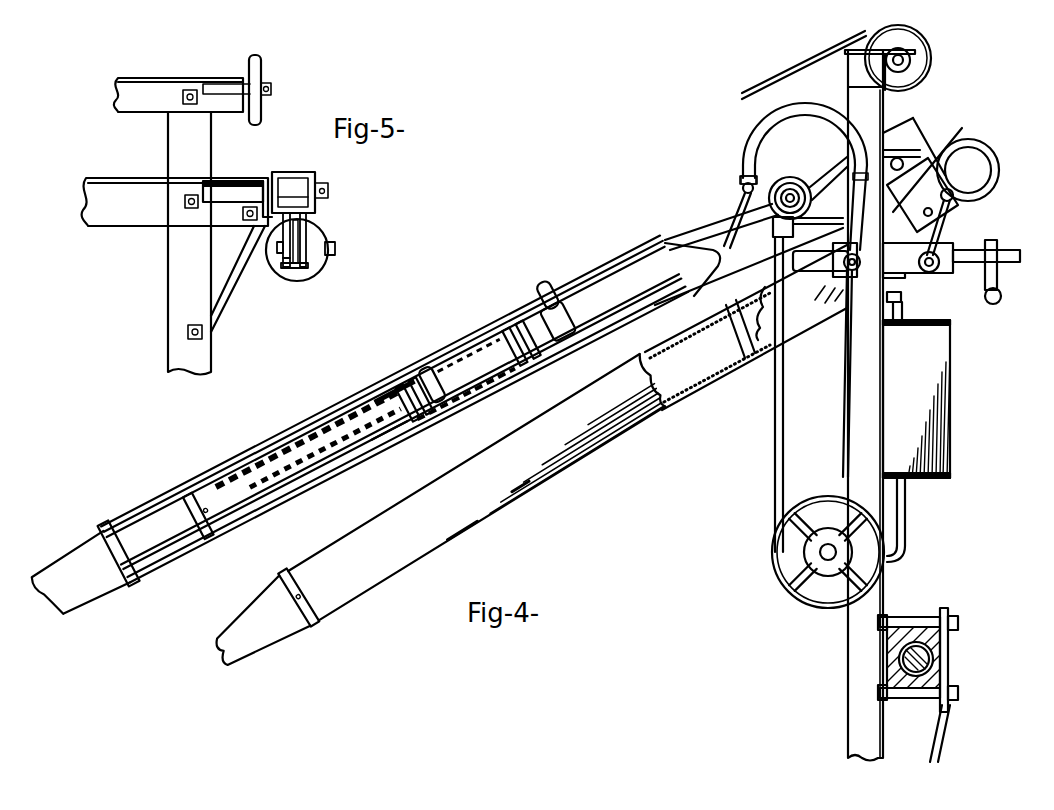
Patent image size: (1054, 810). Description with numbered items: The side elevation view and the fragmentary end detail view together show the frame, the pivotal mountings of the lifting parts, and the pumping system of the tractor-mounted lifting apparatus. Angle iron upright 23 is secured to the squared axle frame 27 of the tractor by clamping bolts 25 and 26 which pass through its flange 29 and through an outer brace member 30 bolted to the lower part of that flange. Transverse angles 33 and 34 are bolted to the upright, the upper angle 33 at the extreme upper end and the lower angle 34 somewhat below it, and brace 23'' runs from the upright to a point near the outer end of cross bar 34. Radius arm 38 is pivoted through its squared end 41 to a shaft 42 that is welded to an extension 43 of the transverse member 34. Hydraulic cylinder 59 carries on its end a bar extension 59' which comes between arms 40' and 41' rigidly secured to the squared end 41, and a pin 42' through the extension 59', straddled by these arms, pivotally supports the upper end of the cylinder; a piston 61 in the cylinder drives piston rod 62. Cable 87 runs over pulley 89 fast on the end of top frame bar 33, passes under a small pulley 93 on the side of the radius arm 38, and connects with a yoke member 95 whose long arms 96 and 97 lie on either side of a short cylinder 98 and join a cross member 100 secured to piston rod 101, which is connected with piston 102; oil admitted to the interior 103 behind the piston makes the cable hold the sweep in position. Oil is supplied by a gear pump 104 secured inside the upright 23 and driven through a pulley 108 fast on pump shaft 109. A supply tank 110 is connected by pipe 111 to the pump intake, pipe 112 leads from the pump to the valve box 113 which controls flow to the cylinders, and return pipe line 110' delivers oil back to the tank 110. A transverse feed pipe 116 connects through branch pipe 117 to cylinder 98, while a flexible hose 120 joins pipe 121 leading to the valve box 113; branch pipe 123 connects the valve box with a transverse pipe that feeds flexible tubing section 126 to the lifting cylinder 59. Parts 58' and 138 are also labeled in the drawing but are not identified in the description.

In FIG. 5, the angle iron upright 23 is at (173, 243).
In FIG. 4, the angle iron upright 23 is at (837, 405).
In FIG. 5, the brace 23'' is at (257, 284).
In FIG. 4, the clamping bolt 25 is at (924, 610).
In FIG. 4, the clamping bolt 26 is at (929, 695).
In FIG. 4, the squared axle frame 27 is at (947, 677).
In FIG. 4, the flange 29 is at (896, 592).
In FIG. 4, the outer brace member 30 is at (947, 658).
In FIG. 5, the transverse angle 33 is at (143, 101).
In FIG. 4, the transverse angle 33 is at (883, 73).
In FIG. 5, the transverse angle 34 is at (137, 213).
In FIG. 4, the transverse angle 34 is at (912, 135).
In FIG. 4, the radius arm 38 is at (62, 567).
In FIG. 5, the arm 40' is at (264, 273).
In FIG. 4, the arm 40' is at (943, 162).
In FIG. 5, the squared end 41 is at (321, 192).
In FIG. 5, the arm 41' is at (321, 235).
In FIG. 5, the shaft 42 is at (247, 176).
In FIG. 4, the shaft 42 is at (922, 174).
In FIG. 5, the pin 42' is at (332, 237).
In FIG. 5, the extension 43 is at (222, 182).
In FIG. 5, the cross pin 58' is at (297, 287).
In FIG. 5, the hydraulic cylinder 59 is at (318, 250).
In FIG. 4, the hydraulic cylinder 59 is at (339, 594).
In FIG. 4, the bar extension 59' is at (961, 230).
In FIG. 4, the piston 61 is at (735, 352).
In FIG. 4, the piston rod 62 is at (283, 612).
In FIG. 4, the cable 87 is at (783, 73).
In FIG. 5, the pulley 89 is at (263, 62).
In FIG. 4, the pulley 89 is at (920, 42).
In FIG. 4, the small pulley 93 is at (790, 180).
In FIG. 4, the yoke member 95 is at (693, 240).
In FIG. 4, the long arm 96 is at (340, 414).
In FIG. 4, the long arm 97 is at (372, 465).
In FIG. 4, the short cylinder 98 is at (240, 502).
In FIG. 4, the cross member 100 is at (123, 578).
In FIG. 4, the piston rod 101 is at (175, 532).
In FIG. 4, the piston 102 is at (440, 405).
In FIG. 4, the interior 103 is at (450, 415).
In FIG. 4, the gear pump 104 is at (827, 587).
In FIG. 4, the pulley 108 is at (776, 552).
In FIG. 4, the gear pump shaft 109 is at (808, 559).
In FIG. 4, the supply tank 110 is at (940, 399).
In FIG. 4, the return pipe line 110' is at (943, 296).
In FIG. 4, the pipe 111 is at (906, 496).
In FIG. 4, the pipe 112 is at (775, 463).
In FIG. 4, the valve box 113 is at (907, 287).
In FIG. 4, the transverse feed pipe 116 is at (742, 186).
In FIG. 4, the branch pipe 117 is at (628, 254).
In FIG. 4, the flexible hose 120 is at (758, 135).
In FIG. 4, the pipe 121 is at (841, 312).
In FIG. 4, the branch pipe 123 is at (990, 246).
In FIG. 4, the flexible tubing section 126 is at (999, 165).
In FIG. 4, the lever knob 138 is at (1001, 292).